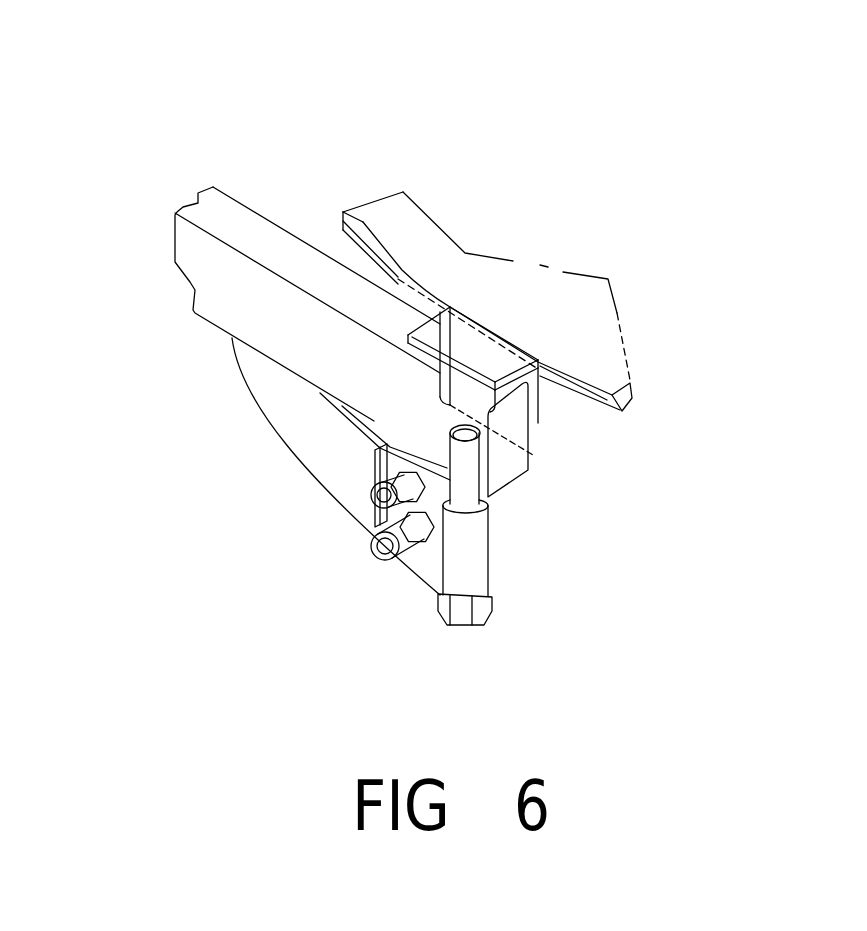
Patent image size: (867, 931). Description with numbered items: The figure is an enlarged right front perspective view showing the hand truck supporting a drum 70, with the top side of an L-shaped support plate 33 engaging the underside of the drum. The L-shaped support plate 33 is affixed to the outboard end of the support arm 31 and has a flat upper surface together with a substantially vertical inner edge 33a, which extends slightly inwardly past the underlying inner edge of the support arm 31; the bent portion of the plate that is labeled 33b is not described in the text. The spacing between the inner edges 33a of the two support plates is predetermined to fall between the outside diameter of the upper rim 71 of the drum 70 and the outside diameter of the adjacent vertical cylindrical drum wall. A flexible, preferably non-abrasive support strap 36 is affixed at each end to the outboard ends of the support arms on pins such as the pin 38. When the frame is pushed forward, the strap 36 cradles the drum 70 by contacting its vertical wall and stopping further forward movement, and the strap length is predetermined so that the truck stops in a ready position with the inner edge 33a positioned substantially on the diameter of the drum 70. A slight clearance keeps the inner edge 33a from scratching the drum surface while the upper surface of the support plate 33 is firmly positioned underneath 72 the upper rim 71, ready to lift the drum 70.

The support arm 31 is at (505, 461).
The L-shaped support plate 33 is at (561, 487).
The inner edge of support plate 33a is at (556, 370).
The leg of bracket 33b is at (536, 378).
The support strap 36 is at (332, 452).
The pin 38 is at (472, 483).
The drum 70 is at (486, 211).
The upper rim of the drum 71 is at (632, 380).
The underneath of the upper rim 72 is at (633, 407).